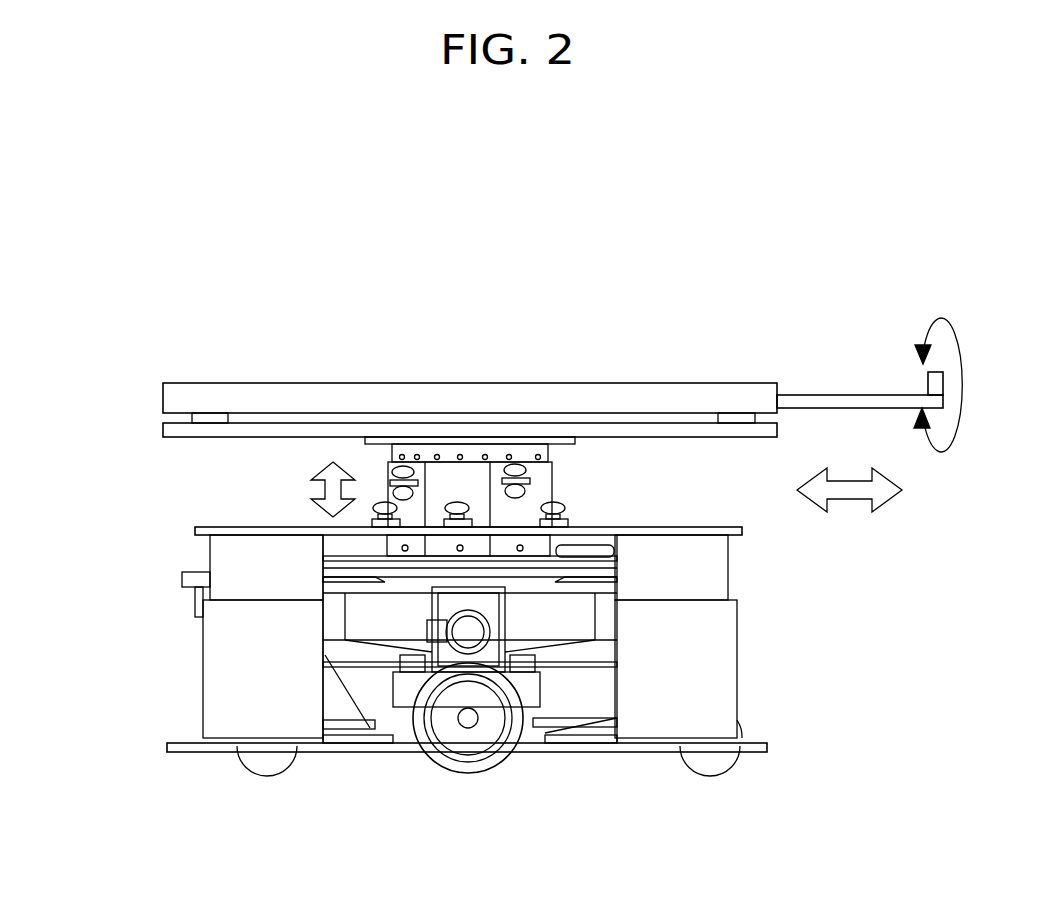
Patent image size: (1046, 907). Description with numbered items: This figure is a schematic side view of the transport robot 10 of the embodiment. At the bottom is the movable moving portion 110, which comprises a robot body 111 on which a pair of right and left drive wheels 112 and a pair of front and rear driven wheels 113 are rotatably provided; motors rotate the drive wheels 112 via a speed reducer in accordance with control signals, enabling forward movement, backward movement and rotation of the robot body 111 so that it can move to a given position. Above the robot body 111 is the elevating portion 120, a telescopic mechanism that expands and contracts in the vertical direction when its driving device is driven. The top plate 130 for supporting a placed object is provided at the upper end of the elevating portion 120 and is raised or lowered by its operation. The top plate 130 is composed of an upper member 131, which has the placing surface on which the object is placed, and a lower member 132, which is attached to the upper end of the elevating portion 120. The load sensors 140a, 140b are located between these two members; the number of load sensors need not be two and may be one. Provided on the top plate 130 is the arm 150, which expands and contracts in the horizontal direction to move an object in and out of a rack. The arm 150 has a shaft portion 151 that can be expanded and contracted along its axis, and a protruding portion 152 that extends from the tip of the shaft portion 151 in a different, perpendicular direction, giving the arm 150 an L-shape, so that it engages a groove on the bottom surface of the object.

The transport robot 10 is at (196, 193).
The moving portion 110 is at (124, 692).
The robot body 111 is at (728, 562).
The drive wheel 112 is at (470, 775).
The driven wheel 113 is at (263, 775).
The elevating portion 120 is at (552, 478).
The top plate 130 is at (253, 323).
The upper member 131 is at (163, 396).
The lower member 132 is at (163, 437).
The load sensor 140a is at (743, 419).
The load sensor 140b is at (204, 419).
The arm 150 is at (882, 278).
The shaft portion 151 is at (797, 394).
The protruding portion 152 is at (928, 381).